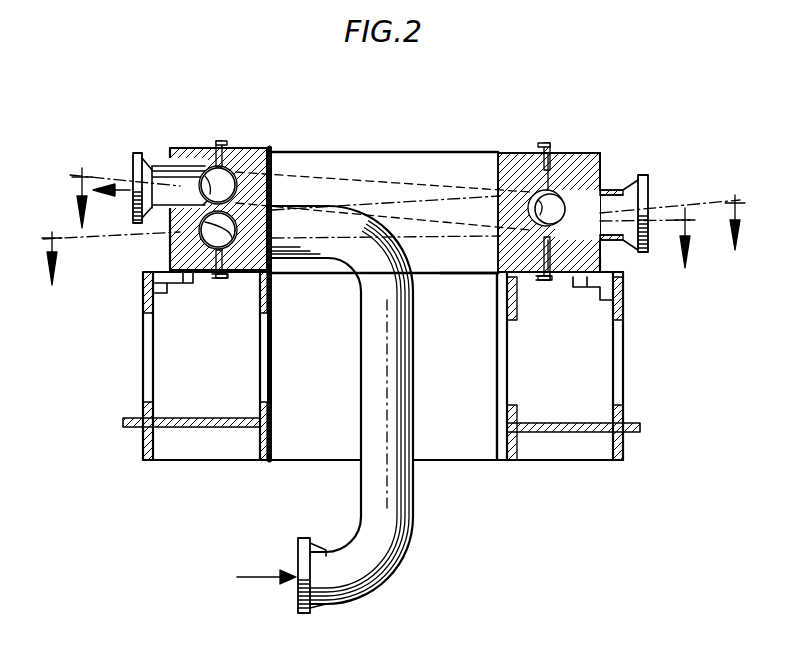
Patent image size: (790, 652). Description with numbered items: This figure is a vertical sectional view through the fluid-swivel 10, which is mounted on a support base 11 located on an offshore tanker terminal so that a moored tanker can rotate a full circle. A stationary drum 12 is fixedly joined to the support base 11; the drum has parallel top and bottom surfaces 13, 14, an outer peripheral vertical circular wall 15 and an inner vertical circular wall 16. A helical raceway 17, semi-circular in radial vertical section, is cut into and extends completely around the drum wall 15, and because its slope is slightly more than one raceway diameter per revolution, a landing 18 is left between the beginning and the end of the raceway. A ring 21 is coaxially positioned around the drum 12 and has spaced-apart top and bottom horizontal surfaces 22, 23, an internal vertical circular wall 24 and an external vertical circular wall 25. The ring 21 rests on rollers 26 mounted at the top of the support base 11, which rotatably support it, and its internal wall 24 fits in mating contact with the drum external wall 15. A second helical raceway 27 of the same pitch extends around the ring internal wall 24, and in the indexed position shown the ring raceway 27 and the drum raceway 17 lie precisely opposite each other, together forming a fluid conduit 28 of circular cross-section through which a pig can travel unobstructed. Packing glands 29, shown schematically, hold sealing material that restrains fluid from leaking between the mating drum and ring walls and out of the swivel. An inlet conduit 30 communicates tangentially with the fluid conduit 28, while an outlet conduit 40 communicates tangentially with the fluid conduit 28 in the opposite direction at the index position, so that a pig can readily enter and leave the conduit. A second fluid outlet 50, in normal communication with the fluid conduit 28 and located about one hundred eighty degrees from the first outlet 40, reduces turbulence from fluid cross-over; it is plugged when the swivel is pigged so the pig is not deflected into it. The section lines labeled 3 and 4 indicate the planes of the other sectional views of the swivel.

The section line for FIG. 3 is at (388, 240).
The section line for FIG. 4 is at (379, 218).
The fluid-swivel 10 is at (610, 110).
The support base 11 is at (280, 300).
The stationary drum 12 is at (270, 138).
The top surface 13 is at (507, 151).
The bottom surface 14 is at (503, 312).
The outer peripheral vertical circular wall 15 is at (226, 262).
The inner vertical circular wall 16 is at (497, 255).
The raceway 17 is at (232, 172).
The landing 18 is at (200, 232).
The ring 21 is at (175, 132).
The top surface 22 is at (190, 148).
The bottom surface 23 is at (202, 262).
The internal vertical circular wall 24 is at (566, 175).
The external vertical circular wall 25 is at (603, 258).
The rollers 26 is at (592, 290).
The helical raceway 27 is at (195, 170).
The fluid conduit 28 is at (205, 212).
The packing glands 29 is at (222, 142).
The inlet conduit 30 is at (315, 262).
The outlet conduit 40 is at (133, 168).
The second fluid outlet 50 is at (650, 188).